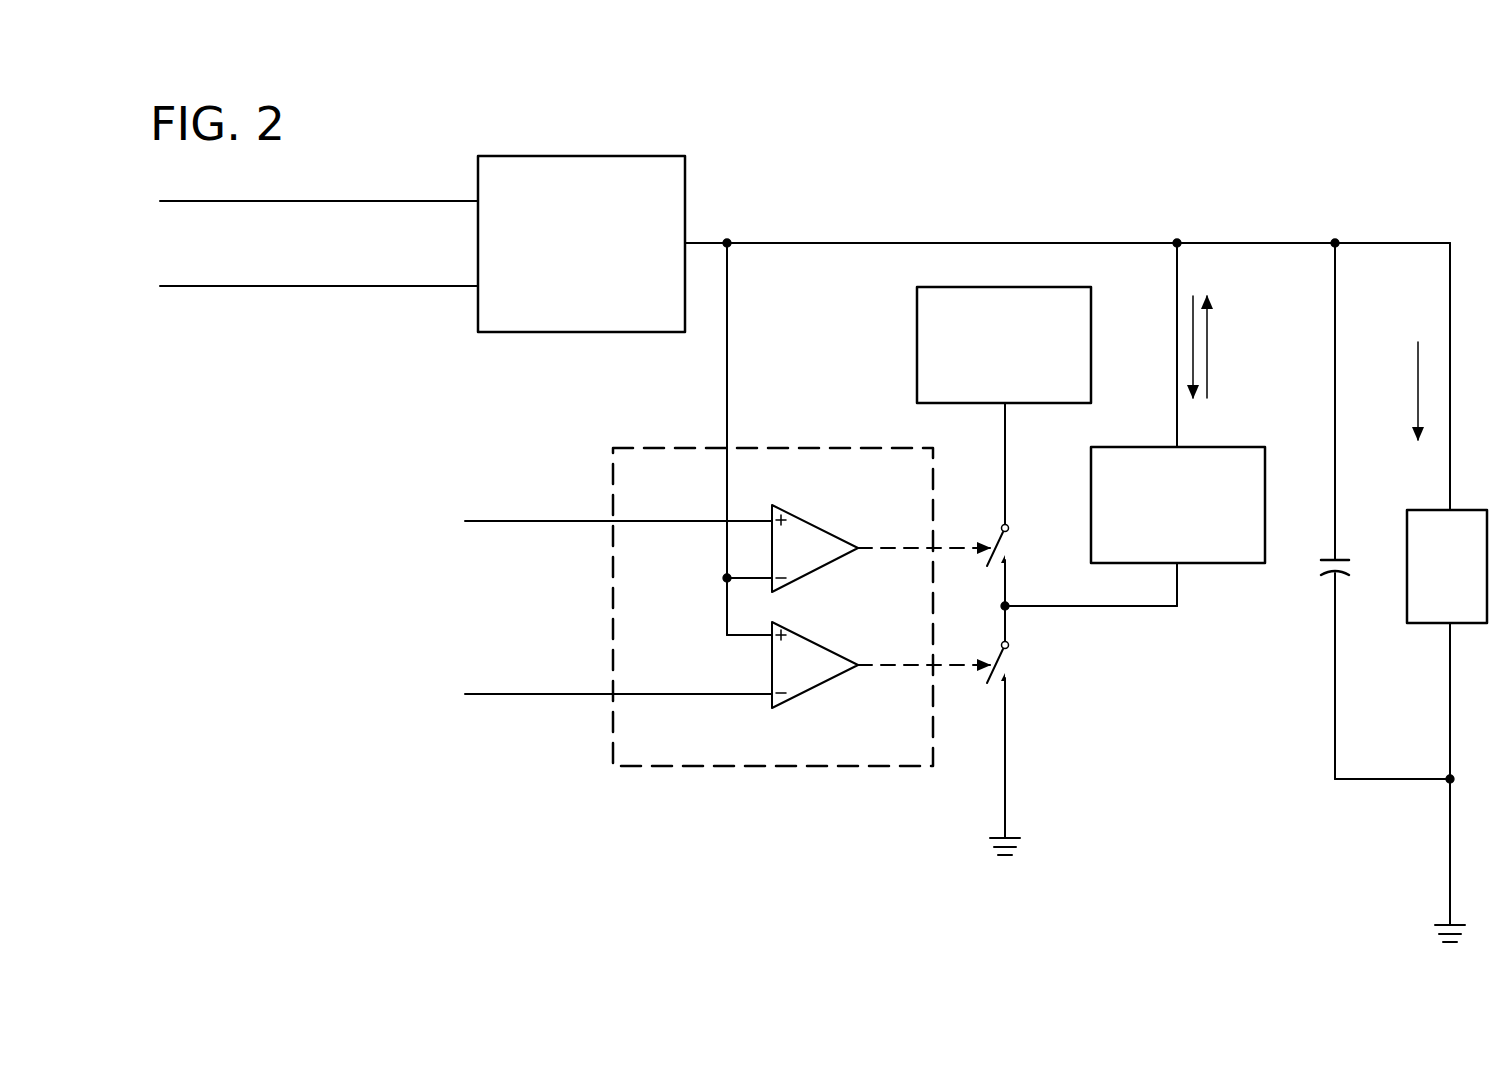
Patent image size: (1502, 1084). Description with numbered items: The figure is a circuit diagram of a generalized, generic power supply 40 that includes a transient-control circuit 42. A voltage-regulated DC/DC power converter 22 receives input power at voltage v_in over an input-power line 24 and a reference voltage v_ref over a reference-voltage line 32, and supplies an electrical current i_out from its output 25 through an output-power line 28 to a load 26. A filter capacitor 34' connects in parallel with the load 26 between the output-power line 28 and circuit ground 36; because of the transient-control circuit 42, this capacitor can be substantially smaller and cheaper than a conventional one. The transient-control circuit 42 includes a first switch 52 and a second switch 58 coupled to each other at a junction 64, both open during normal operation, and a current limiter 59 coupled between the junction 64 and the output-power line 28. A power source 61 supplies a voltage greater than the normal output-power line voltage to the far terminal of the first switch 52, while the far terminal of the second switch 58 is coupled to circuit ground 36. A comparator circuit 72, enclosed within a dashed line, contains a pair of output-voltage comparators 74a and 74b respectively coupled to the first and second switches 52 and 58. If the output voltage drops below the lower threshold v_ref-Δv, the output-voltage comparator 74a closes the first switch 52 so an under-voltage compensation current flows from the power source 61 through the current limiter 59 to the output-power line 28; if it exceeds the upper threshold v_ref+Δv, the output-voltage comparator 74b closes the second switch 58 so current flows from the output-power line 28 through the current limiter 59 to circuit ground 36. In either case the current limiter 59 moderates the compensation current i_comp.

The power supply 40 is at (418, 187).
The input-power line 24 is at (218, 204).
The reference-voltage line 32 is at (218, 290).
The DC/DC power converter 22 is at (516, 196).
The output 25 is at (688, 243).
The transient-control circuit 42 is at (567, 753).
The comparator circuit 72 is at (752, 768).
The output-voltage comparator 74a is at (812, 538).
The output-voltage comparator 74b is at (812, 655).
The power source 61 is at (952, 321).
The first switch 52 is at (1003, 548).
The junction 64 is at (1003, 607).
The second switch 58 is at (1003, 666).
The current limiter 59 is at (1127, 483).
The output-power line 28 is at (1427, 244).
The filter capacitor 34' is at (1364, 511).
The load 26 is at (1444, 557).
The circuit ground 36 is at (1000, 837).